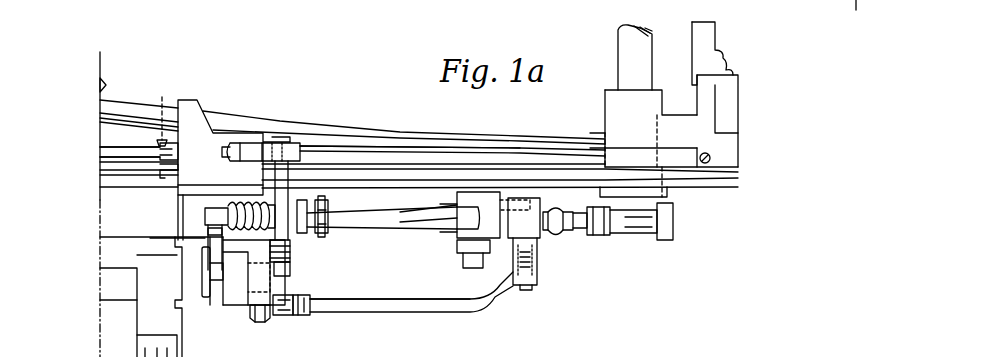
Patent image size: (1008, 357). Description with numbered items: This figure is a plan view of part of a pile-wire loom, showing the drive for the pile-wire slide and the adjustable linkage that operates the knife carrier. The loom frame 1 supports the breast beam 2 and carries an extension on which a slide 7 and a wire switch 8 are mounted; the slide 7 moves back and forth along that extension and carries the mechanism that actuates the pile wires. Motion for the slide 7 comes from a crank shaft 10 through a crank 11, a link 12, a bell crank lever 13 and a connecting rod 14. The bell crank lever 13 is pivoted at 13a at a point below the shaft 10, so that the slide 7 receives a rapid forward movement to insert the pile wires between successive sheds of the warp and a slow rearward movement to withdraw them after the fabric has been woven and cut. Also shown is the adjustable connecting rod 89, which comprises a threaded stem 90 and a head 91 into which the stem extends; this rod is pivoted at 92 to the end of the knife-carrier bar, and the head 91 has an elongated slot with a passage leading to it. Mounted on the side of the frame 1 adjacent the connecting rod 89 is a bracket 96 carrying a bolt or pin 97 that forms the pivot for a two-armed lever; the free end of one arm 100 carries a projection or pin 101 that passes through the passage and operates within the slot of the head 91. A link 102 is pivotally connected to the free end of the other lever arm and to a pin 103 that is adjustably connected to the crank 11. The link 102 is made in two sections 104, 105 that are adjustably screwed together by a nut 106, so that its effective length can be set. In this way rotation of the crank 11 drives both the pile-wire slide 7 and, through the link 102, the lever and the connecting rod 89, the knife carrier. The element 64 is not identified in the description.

The loom frame 1 is at (199, 271).
The breast beam 2 is at (141, 297).
The slide 7 is at (214, 128).
The wire switch 8 is at (348, 162).
The crank shaft 10 is at (643, 96).
The crank 11 is at (578, 229).
The link 12 is at (607, 233).
The bell crank lever 13 is at (455, 226).
The pivot 13a is at (477, 268).
The connecting rod 14 is at (302, 230).
The pin 64 is at (121, 152).
The connecting rod 89 is at (206, 165).
The threaded stem 90 is at (391, 147).
The head 91 is at (258, 151).
The pivot 92 is at (158, 113).
The bracket 96 is at (240, 300).
The bolt or pin 97 is at (258, 316).
The arm 100 is at (290, 262).
The projection or pin 101 is at (283, 195).
The link 102 is at (412, 300).
The pin 103 is at (532, 286).
The section 104 is at (283, 311).
The section 105 is at (382, 311).
The nut 106 is at (308, 300).